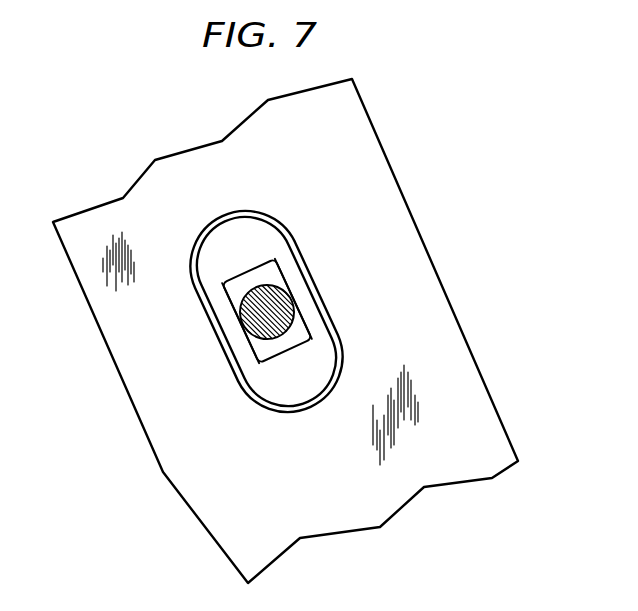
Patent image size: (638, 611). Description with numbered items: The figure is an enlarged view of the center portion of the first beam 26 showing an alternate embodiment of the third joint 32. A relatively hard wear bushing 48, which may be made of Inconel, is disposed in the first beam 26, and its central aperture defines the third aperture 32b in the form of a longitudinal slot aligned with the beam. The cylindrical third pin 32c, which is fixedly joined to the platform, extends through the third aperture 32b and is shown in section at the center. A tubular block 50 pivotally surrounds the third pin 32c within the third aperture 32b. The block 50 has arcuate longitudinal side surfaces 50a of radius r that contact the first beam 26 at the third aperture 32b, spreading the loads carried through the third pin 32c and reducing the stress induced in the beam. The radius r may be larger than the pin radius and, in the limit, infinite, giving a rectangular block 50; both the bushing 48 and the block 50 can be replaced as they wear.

The first beam 26 is at (417, 222).
The wear bushing 48 is at (263, 216).
The third joint 32 is at (345, 292).
The third aperture 32b is at (252, 395).
The third pin 32c is at (245, 321).
The tubular block 50 is at (273, 353).
The arcuate longitudinal side surfaces 50a is at (272, 273).
The radius r is at (268, 259).